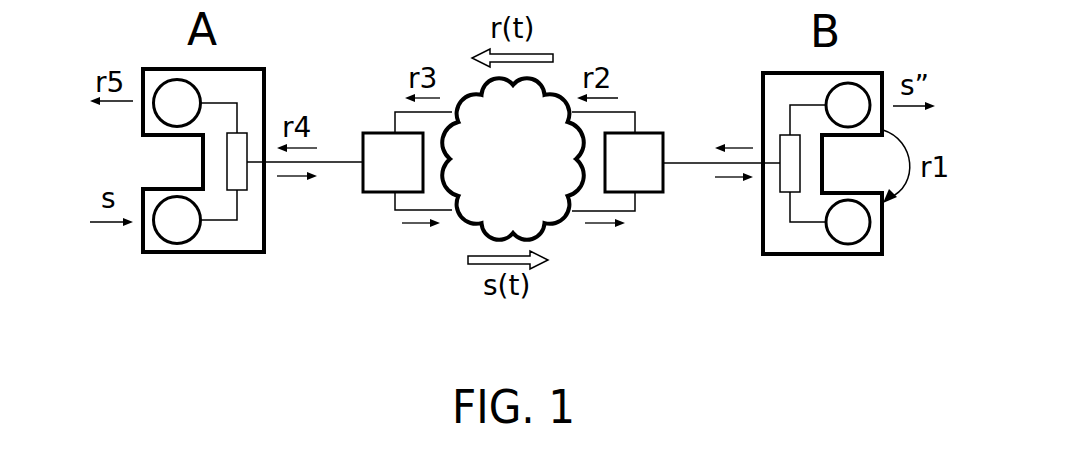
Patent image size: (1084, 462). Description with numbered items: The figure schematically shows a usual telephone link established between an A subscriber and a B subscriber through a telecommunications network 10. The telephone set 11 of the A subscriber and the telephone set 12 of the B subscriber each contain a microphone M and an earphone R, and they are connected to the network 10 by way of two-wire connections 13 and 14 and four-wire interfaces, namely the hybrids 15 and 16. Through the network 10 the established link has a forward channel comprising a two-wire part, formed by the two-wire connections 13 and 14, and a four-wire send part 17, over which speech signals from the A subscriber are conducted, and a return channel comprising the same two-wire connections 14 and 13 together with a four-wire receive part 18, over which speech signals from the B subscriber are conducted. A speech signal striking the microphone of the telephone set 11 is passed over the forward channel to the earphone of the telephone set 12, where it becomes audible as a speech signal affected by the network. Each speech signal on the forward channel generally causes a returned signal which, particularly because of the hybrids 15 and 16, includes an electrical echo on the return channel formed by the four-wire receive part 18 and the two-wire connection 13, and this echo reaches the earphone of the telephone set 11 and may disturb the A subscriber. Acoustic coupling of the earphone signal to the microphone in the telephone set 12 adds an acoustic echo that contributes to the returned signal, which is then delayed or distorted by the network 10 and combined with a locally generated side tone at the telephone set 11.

The telecommunications network 10 is at (527, 175).
The telephone set 11 is at (239, 254).
The telephone set 12 is at (792, 255).
The two-wire connection 13 is at (340, 163).
The two-wire connection 14 is at (688, 167).
The hybrid 15 is at (363, 137).
The hybrid 16 is at (663, 140).
The four-wire send part 17 is at (395, 212).
The four-wire receive part 18 is at (395, 107).